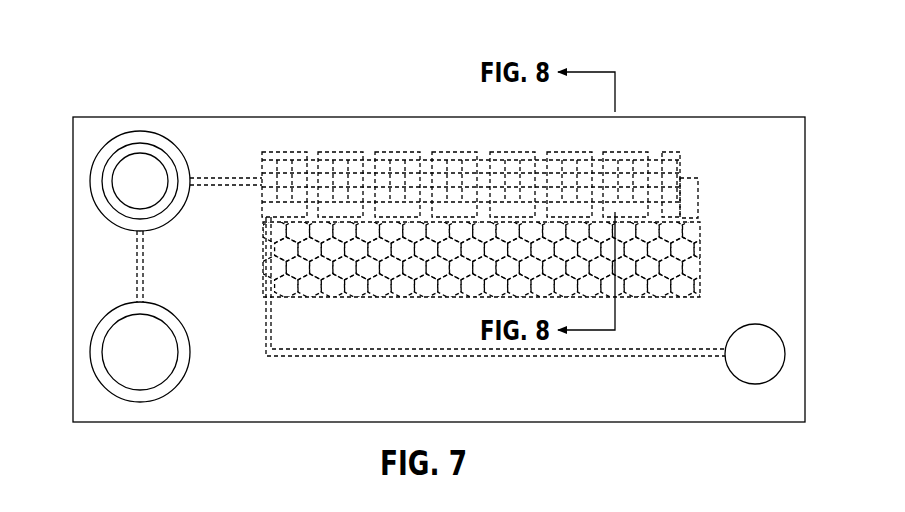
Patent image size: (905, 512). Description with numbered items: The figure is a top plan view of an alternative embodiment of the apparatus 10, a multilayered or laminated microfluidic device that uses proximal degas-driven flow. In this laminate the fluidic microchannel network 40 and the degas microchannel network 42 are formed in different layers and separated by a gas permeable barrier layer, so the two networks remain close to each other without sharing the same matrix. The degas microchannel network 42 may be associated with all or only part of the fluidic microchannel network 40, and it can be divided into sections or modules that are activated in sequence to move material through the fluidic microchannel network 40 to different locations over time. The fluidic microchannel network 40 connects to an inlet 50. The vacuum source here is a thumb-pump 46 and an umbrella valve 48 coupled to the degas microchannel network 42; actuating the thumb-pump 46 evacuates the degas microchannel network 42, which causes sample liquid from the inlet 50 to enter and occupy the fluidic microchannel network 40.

The apparatus 10 is at (125, 50).
The fluidic microchannel network 40 is at (358, 300).
The degas microchannel network 42 is at (223, 180).
The thumb-pump 46 is at (185, 372).
The umbrella valve 48 is at (162, 228).
The inlet 50 is at (735, 375).